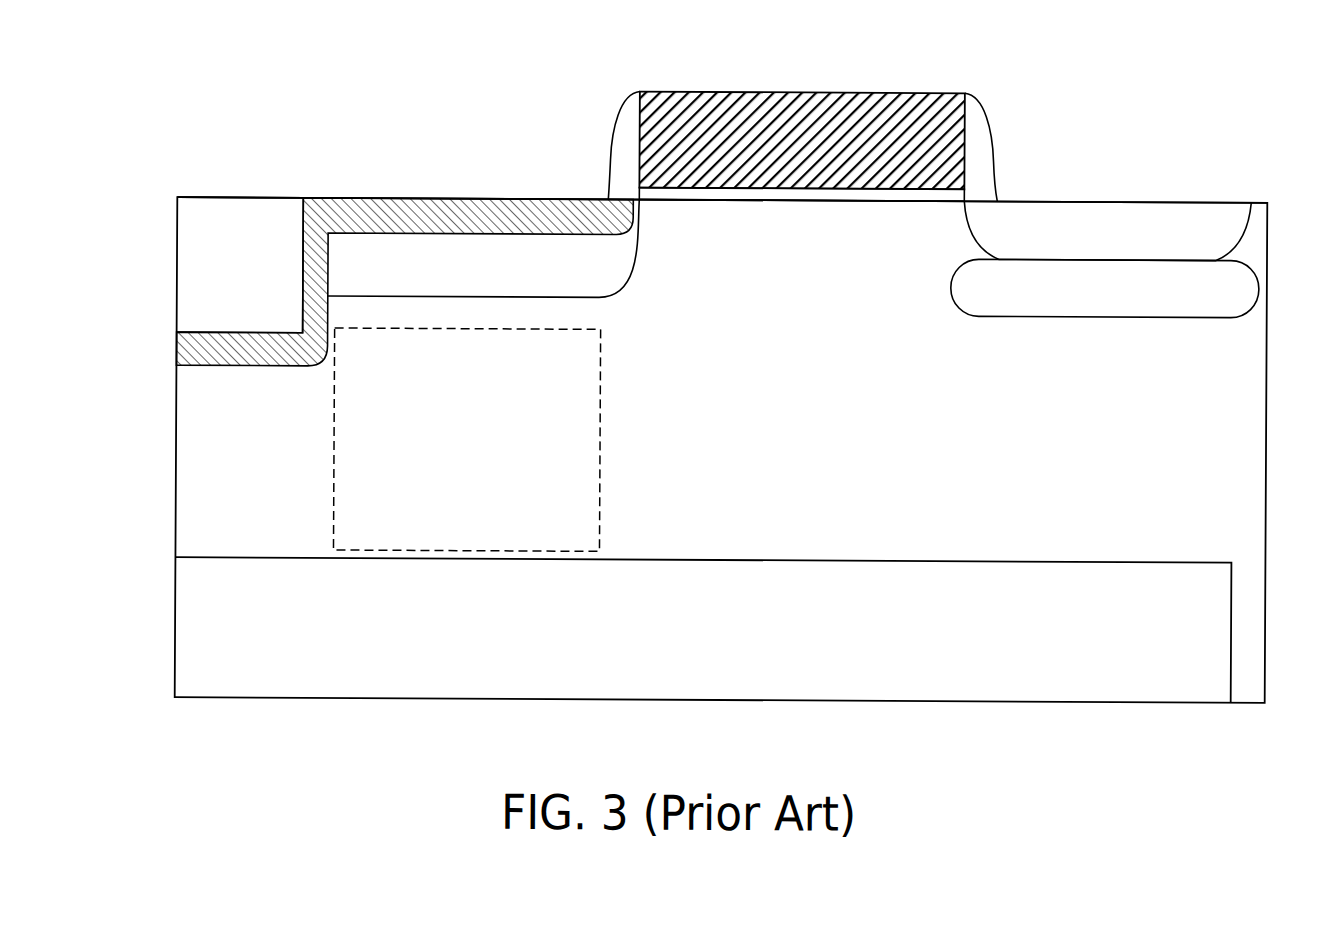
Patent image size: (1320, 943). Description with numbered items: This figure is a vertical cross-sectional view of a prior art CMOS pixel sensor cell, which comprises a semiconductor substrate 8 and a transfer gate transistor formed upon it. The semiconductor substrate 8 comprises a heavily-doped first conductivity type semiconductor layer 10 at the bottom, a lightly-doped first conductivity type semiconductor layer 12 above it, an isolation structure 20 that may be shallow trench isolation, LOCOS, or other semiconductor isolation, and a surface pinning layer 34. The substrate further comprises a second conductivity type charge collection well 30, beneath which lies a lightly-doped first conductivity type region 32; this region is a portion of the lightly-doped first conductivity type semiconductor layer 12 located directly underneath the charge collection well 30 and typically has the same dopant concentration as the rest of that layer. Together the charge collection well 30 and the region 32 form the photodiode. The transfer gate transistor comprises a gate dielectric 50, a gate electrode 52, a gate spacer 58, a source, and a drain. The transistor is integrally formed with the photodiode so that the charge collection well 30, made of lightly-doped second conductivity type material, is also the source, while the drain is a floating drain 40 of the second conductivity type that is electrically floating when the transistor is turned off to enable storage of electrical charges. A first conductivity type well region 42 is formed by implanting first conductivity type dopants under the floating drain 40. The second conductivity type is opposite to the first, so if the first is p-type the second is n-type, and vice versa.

The semiconductor substrate 8 is at (169, 199).
The heavily-doped first conductivity type semiconductor layer 10 is at (748, 640).
The lightly-doped first conductivity type semiconductor layer 12 is at (841, 450).
The isolation structure 20 is at (222, 285).
The second conductivity type charge collection well 30 is at (441, 283).
The lightly-doped first conductivity type region 32 is at (590, 447).
The surface pinning layer 34 is at (366, 212).
The floating drain 40 is at (1086, 245).
The first conductivity type well region 42 is at (1086, 301).
The gate dielectric 50 is at (950, 196).
The gate electrode 52 is at (783, 161).
The gate spacer 58 is at (623, 120).